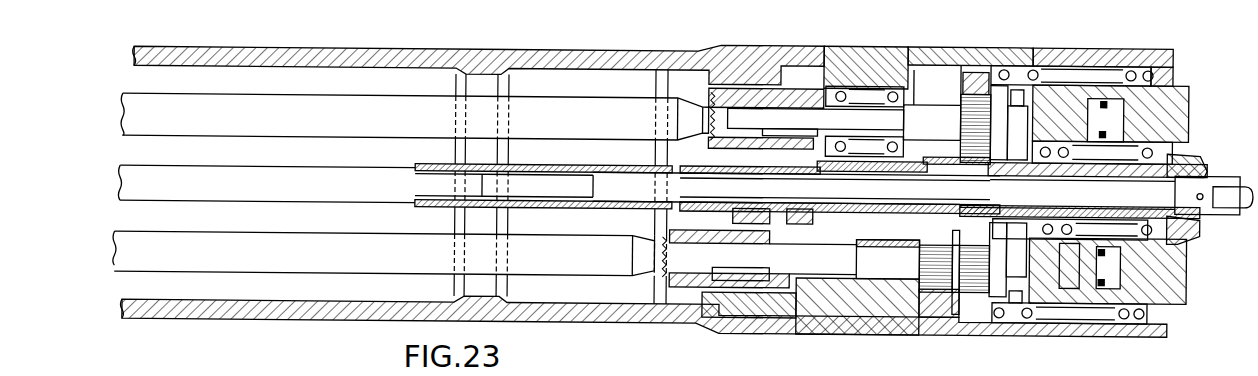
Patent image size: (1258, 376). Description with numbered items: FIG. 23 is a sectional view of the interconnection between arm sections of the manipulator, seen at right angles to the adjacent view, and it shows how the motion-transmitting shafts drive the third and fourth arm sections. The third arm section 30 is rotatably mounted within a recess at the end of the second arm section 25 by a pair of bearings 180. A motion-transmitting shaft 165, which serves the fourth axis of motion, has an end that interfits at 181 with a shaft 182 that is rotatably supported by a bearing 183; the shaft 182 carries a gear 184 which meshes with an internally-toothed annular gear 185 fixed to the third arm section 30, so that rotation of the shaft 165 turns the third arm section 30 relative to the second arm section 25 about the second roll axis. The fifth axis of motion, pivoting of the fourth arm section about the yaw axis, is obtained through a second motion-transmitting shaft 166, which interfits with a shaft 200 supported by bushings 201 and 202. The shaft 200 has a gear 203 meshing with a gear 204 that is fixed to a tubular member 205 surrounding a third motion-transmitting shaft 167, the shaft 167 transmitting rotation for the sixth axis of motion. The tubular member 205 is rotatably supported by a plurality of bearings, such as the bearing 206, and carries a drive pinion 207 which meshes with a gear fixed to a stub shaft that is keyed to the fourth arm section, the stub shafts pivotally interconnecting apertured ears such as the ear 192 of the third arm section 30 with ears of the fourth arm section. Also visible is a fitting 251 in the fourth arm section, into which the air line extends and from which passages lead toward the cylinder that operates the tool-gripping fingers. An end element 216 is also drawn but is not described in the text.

The second arm section 25 is at (765, 50).
The third arm section 30 is at (1173, 82).
The motion-transmitting shaft 165 is at (570, 117).
The motion-transmitting shaft 166 is at (603, 267).
The motion-transmitting shaft 167 is at (560, 203).
The bearings 180 is at (1134, 48).
The interfit 181 is at (787, 108).
The shaft 182 is at (917, 73).
The bearing 183 is at (887, 87).
The gear 184 is at (1023, 63).
The internally-toothed annular gear 185 is at (980, 327).
The apertured ear 192 is at (1180, 288).
The shaft 200 is at (842, 262).
The bushing 201 is at (797, 285).
The bushing 202 is at (898, 280).
The gear 203 is at (935, 282).
The gear 204 is at (930, 120).
The tubular member 205 is at (1186, 257).
The bearing 206 is at (1163, 146).
The drive pinion 207 is at (1200, 156).
The shaft tip 216 is at (1230, 210).
The fitting 251 is at (1070, 282).